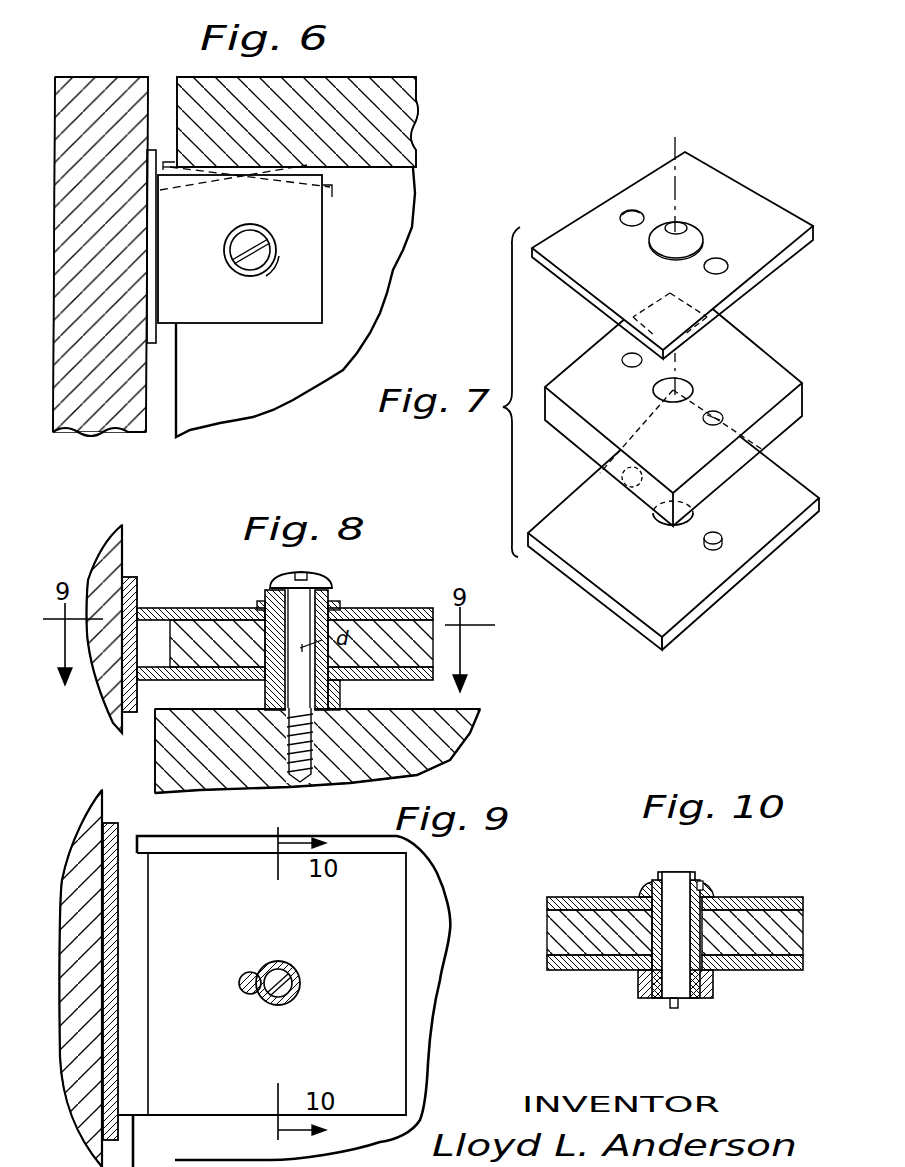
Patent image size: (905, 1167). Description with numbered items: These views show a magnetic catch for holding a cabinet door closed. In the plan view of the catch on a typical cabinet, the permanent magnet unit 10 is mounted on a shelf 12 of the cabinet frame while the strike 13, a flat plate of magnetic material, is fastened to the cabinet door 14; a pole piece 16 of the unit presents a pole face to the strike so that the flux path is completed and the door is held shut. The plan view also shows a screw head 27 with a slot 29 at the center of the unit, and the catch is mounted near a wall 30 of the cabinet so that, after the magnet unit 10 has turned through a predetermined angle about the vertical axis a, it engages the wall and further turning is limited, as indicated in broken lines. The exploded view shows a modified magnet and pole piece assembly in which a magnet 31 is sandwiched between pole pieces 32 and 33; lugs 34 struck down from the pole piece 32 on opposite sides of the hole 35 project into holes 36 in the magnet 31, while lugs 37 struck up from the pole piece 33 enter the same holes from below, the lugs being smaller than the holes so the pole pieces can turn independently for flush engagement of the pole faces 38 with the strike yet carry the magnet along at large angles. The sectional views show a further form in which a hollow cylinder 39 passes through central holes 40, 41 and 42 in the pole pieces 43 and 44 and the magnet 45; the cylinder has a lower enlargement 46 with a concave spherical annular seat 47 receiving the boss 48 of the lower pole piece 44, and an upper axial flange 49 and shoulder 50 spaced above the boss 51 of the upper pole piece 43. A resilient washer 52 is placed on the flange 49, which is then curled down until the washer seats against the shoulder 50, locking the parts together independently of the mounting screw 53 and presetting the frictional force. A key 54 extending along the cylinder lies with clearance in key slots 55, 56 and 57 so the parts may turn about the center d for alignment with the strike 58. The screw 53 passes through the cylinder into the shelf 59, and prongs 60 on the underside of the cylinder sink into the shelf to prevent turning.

In FIG. 6, the permanent magnet unit 10 is at (330, 218).
In FIG. 6, the shelf 12 is at (383, 262).
In FIG. 6, the strike 13 is at (155, 333).
In FIG. 6, the cabinet door 14 is at (60, 318).
In FIG. 6, the pole piece 16 is at (264, 262).
In FIG. 6, the screw head 27 is at (244, 239).
In FIG. 6, the screw slot 29 is at (250, 232).
In FIG. 6, the wall 30 is at (412, 133).
In FIG. 7, the magnet 31 is at (673, 401).
In FIG. 7, the pole piece 32 is at (672, 248).
In FIG. 7, the pole piece 33 is at (673, 521).
In FIG. 7, the lugs 34 is at (632, 219).
In FIG. 7, the hole 35 is at (685, 392).
In FIG. 7, the holes 36 is at (630, 363).
In FIG. 7, the lugs 37 is at (625, 483).
In FIG. 7, the pole faces 38 is at (597, 598).
In FIG. 7, the vertical axis a is at (680, 205).
In FIG. 8, the hollow cylinder 39 is at (302, 653).
In FIG. 9, the hollow cylinder 39 is at (276, 999).
In FIG. 10, the hollow cylinder 39 is at (680, 934).
In FIG. 10, the central hole 40 is at (706, 886).
In FIG. 10, the central hole 41 is at (705, 992).
In FIG. 8, the central hole 42 is at (296, 650).
In FIG. 9, the central hole 42 is at (305, 983).
In FIG. 10, the central hole 42 is at (700, 934).
In FIG. 8, the pole piece 43 is at (196, 610).
In FIG. 10, the pole piece 43 is at (556, 906).
In FIG. 8, the pole piece 44 is at (175, 681).
In FIG. 9, the pole piece 44 is at (142, 918).
In FIG. 10, the pole piece 44 is at (562, 970).
In FIG. 8, the magnet 45 is at (170, 625).
In FIG. 9, the magnet 45 is at (280, 984).
In FIG. 10, the magnet 45 is at (654, 942).
In FIG. 8, the enlargement 46 is at (268, 710).
In FIG. 10, the enlargement 46 is at (702, 1000).
In FIG. 8, the annular seat 47 is at (343, 688).
In FIG. 10, the annular seat 47 is at (712, 975).
In FIG. 10, the boss 48 is at (642, 975).
In FIG. 8, the axial flange 49 is at (268, 592).
In FIG. 10, the axial flange 49 is at (672, 871).
In FIG. 10, the shoulder 50 is at (650, 886).
In FIG. 10, the boss 51 is at (640, 893).
In FIG. 8, the resilient washer 52 is at (335, 603).
In FIG. 10, the resilient washer 52 is at (700, 878).
In FIG. 8, the mounting screw 53 is at (304, 587).
In FIG. 9, the mounting screw 53 is at (290, 1010).
In FIG. 8, the key 54 is at (264, 634).
In FIG. 8, the key slot 55 is at (262, 610).
In FIG. 8, the key slot 56 is at (265, 690).
In FIG. 8, the key slot 57 is at (264, 656).
In FIG. 9, the key slot 57 is at (242, 979).
In FIG. 8, the strike 58 is at (160, 567).
In FIG. 9, the strike 58 is at (118, 1125).
In FIG. 8, the shelf 59 is at (460, 736).
In FIG. 9, the shelf 59 is at (432, 868).
In FIG. 8, the prongs 60 is at (283, 715).
In FIG. 10, the prongs 60 is at (672, 1010).